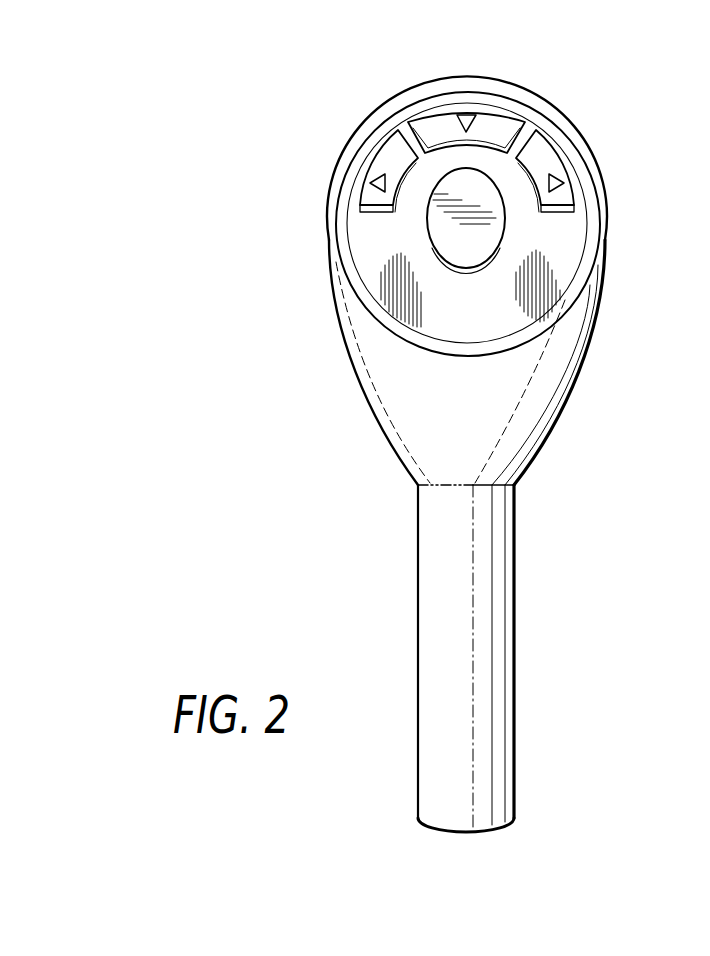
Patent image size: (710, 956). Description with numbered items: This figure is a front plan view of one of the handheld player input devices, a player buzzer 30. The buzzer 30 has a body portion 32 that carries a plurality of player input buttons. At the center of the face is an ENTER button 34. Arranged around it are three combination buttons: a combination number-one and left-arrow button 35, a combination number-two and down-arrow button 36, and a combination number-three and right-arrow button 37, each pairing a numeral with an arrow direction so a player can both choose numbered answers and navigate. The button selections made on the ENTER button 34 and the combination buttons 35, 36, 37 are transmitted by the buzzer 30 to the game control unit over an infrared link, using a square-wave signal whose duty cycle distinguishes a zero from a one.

The player buzzer 30 is at (306, 161).
The body portion 32 is at (515, 557).
The ENTER button 34 is at (440, 253).
The combination NUMBER 1 and LEFT ARROW button 35 is at (371, 163).
The combination NUMBER 2 and DOWN ARROW button 36 is at (473, 103).
The combination NUMBER 3 and RIGHT ARROW button 37 is at (558, 154).